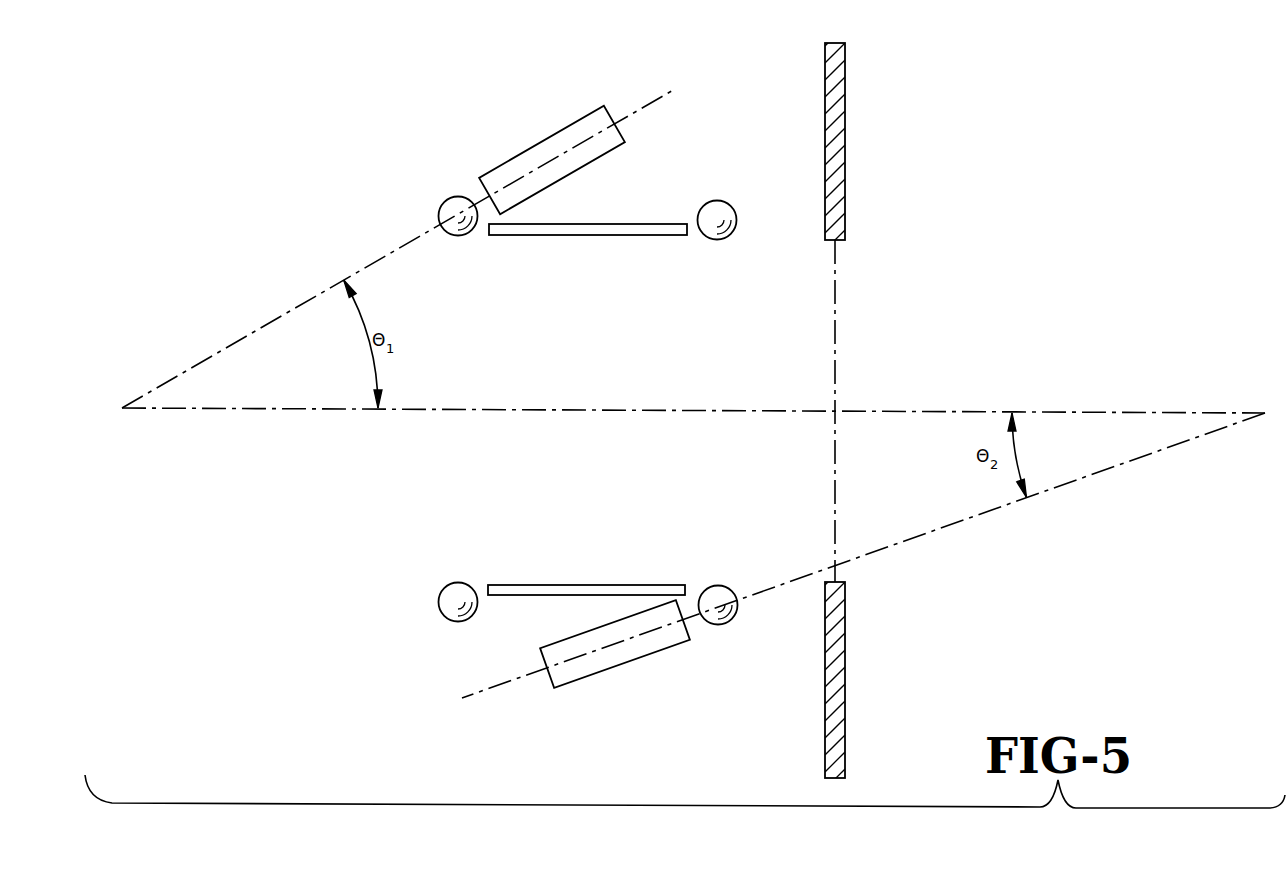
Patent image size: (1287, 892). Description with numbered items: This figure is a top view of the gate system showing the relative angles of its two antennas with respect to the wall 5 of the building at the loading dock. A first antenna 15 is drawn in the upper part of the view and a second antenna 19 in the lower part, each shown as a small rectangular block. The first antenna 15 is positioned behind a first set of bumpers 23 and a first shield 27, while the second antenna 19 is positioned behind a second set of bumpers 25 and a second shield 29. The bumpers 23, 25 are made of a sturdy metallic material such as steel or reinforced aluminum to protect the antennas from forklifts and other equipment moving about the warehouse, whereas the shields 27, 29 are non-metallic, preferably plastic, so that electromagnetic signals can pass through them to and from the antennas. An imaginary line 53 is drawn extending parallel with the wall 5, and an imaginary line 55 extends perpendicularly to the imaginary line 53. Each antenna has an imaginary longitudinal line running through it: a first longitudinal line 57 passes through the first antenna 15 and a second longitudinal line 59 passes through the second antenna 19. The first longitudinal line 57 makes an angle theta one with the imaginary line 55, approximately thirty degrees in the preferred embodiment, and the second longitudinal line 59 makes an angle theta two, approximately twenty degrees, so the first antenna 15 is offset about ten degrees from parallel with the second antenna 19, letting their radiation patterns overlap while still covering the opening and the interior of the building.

The wall 5 is at (846, 130).
The first antenna 15 is at (530, 147).
The second antenna 19 is at (619, 672).
The first set of bumpers 23 is at (453, 205).
The second set of bumpers 25 is at (457, 590).
The first shield 27 is at (633, 223).
The second shield 29 is at (584, 585).
The imaginary line 53 is at (836, 306).
The imaginary line 55 is at (519, 409).
The first longitudinal line 57 is at (365, 268).
The second longitudinal line 59 is at (934, 531).